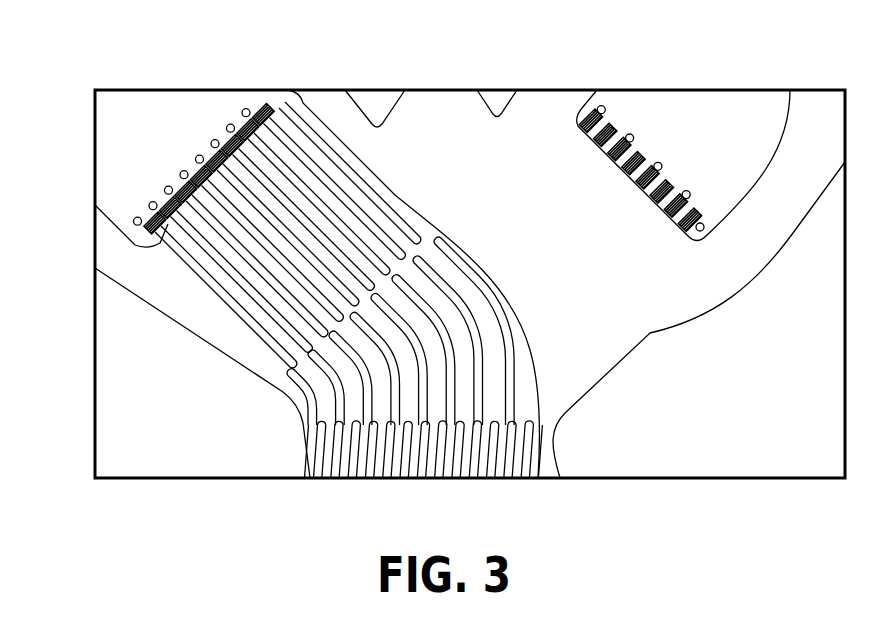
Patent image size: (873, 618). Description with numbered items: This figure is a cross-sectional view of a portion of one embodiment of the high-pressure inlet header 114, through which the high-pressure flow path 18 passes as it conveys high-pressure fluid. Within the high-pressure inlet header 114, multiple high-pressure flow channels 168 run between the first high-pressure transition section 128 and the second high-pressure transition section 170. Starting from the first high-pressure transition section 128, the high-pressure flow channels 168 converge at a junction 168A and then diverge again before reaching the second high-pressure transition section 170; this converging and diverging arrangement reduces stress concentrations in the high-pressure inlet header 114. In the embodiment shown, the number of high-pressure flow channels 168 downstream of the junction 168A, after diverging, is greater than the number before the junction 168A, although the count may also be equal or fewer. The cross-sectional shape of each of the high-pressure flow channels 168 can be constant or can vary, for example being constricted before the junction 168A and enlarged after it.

The high-pressure flow path 18 is at (178, 139).
The high-pressure inlet header 114 is at (146, 336).
The first high-pressure transition section 128 is at (136, 248).
The high-pressure flow channels 168 is at (247, 307).
The junction 168A is at (290, 363).
The second high-pressure transition section 170 is at (311, 423).